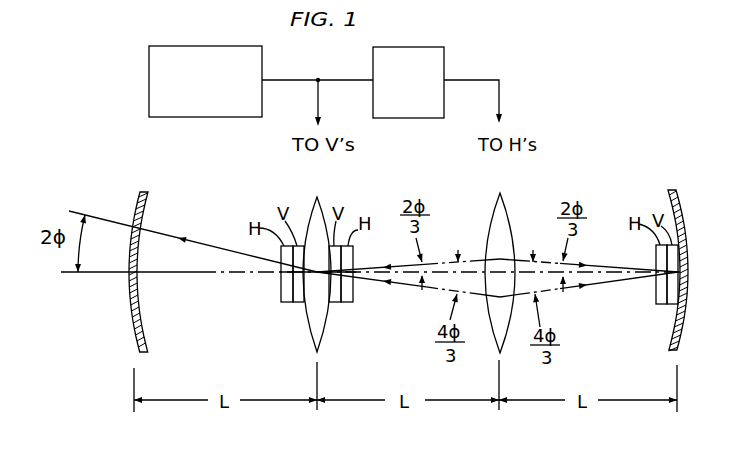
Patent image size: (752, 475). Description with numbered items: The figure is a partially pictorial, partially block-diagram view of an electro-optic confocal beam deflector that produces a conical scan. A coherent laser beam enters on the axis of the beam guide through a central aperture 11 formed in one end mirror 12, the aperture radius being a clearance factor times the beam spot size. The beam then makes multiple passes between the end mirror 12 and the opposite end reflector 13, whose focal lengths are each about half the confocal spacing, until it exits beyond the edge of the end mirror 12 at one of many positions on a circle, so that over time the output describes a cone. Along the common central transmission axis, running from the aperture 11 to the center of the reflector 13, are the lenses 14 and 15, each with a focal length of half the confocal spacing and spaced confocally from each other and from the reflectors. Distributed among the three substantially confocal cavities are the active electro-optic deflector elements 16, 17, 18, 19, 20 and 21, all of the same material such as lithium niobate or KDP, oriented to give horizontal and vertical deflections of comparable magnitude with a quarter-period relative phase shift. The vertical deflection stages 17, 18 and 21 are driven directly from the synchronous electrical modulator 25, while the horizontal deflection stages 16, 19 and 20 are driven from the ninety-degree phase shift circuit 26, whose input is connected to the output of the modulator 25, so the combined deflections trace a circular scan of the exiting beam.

The central aperture 11 is at (129, 276).
The end mirror 12 is at (149, 195).
The opposite end reflector 13 is at (672, 348).
The lens 14 is at (319, 335).
The lens 15 is at (500, 340).
The horizontal deflection stage 16 is at (281, 293).
The vertical deflection stage 17 is at (298, 303).
The vertical deflection stage 18 is at (334, 303).
The horizontal deflection stage 19 is at (347, 303).
The horizontal deflection stage 20 is at (658, 297).
The vertical deflection stage 21 is at (670, 305).
The synchronous electrical modulator 25 is at (149, 97).
The phase shift circuit 26 is at (444, 104).